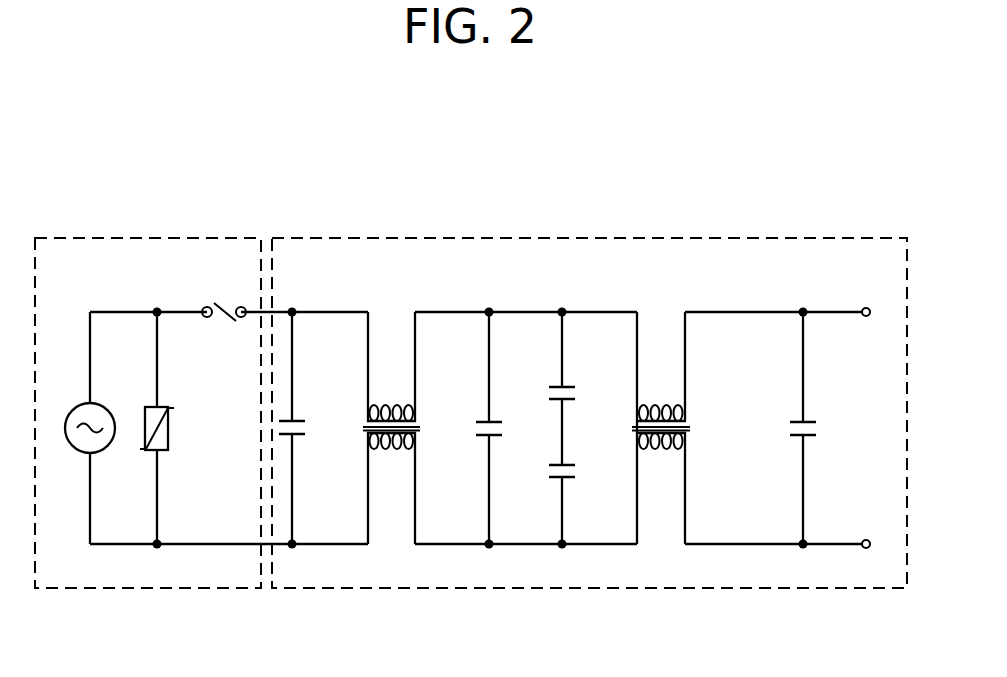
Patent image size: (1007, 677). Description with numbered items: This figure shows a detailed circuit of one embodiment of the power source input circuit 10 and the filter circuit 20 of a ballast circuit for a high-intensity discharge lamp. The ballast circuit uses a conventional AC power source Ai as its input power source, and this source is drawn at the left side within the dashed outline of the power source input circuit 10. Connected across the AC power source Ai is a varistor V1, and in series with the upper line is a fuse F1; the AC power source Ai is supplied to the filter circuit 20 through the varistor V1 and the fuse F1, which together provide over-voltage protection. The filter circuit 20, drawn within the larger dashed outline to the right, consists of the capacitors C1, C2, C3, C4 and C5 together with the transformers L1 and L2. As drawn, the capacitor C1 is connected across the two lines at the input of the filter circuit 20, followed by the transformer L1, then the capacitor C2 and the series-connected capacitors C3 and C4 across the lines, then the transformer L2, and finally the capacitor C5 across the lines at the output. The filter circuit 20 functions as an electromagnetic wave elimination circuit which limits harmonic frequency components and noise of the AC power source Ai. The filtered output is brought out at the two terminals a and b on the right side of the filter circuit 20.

The power source input circuit 10 is at (148, 237).
The filter circuit 20 is at (588, 237).
The AC power source Ai is at (80, 428).
The varistor V1 is at (176, 428).
The fuse F1 is at (224, 296).
The capacitor C1 is at (300, 428).
The transformer L1 is at (391, 428).
The capacitor C2 is at (498, 428).
The capacitor C3 is at (571, 372).
The capacitor C4 is at (571, 488).
The transformer L2 is at (661, 428).
The capacitor C5 is at (812, 428).
The output terminal a is at (876, 311).
The output terminal b is at (876, 544).